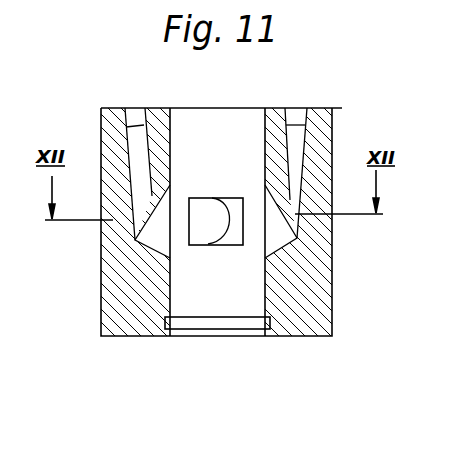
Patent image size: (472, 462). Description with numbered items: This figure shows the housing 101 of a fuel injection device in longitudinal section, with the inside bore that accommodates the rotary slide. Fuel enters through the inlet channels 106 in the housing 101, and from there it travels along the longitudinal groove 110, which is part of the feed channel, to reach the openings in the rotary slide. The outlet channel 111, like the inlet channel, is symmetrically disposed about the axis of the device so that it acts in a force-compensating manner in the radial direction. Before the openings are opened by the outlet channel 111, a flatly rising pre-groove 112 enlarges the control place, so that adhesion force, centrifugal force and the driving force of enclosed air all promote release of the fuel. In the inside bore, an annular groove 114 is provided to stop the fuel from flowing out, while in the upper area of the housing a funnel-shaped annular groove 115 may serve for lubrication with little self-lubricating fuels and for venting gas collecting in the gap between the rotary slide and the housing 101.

The housing 101 is at (317, 229).
The inlet channel 106 is at (300, 135).
The longitudinal groove 110 is at (284, 234).
The outlet channel 111 is at (209, 232).
The pre-groove 112 is at (233, 207).
The annular groove 114 is at (183, 319).
The annular groove 115 is at (266, 108).